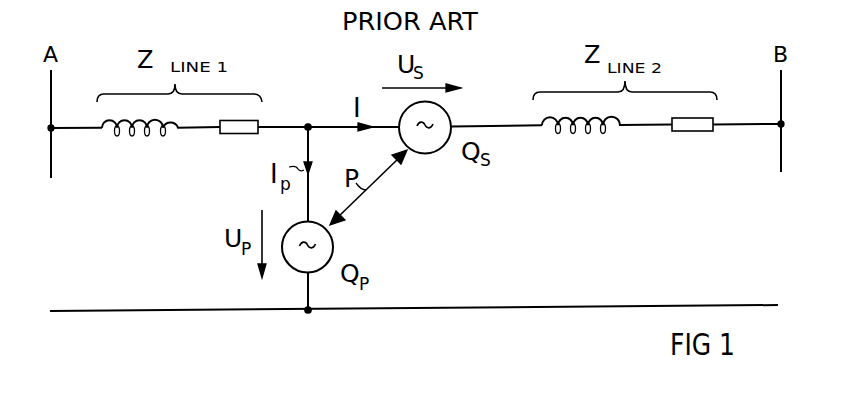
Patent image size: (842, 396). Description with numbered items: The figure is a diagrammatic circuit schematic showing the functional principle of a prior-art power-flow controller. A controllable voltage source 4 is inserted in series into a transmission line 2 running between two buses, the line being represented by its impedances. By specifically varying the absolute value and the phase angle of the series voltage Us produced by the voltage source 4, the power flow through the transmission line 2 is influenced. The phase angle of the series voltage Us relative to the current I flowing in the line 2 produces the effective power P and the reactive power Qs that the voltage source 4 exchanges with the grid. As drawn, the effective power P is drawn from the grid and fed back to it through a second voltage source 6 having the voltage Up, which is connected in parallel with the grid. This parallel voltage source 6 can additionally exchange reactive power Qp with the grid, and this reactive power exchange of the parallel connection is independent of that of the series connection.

The transmission line 2 is at (282, 125).
The controllable voltage source 4 is at (428, 153).
The second voltage source 6 is at (327, 240).